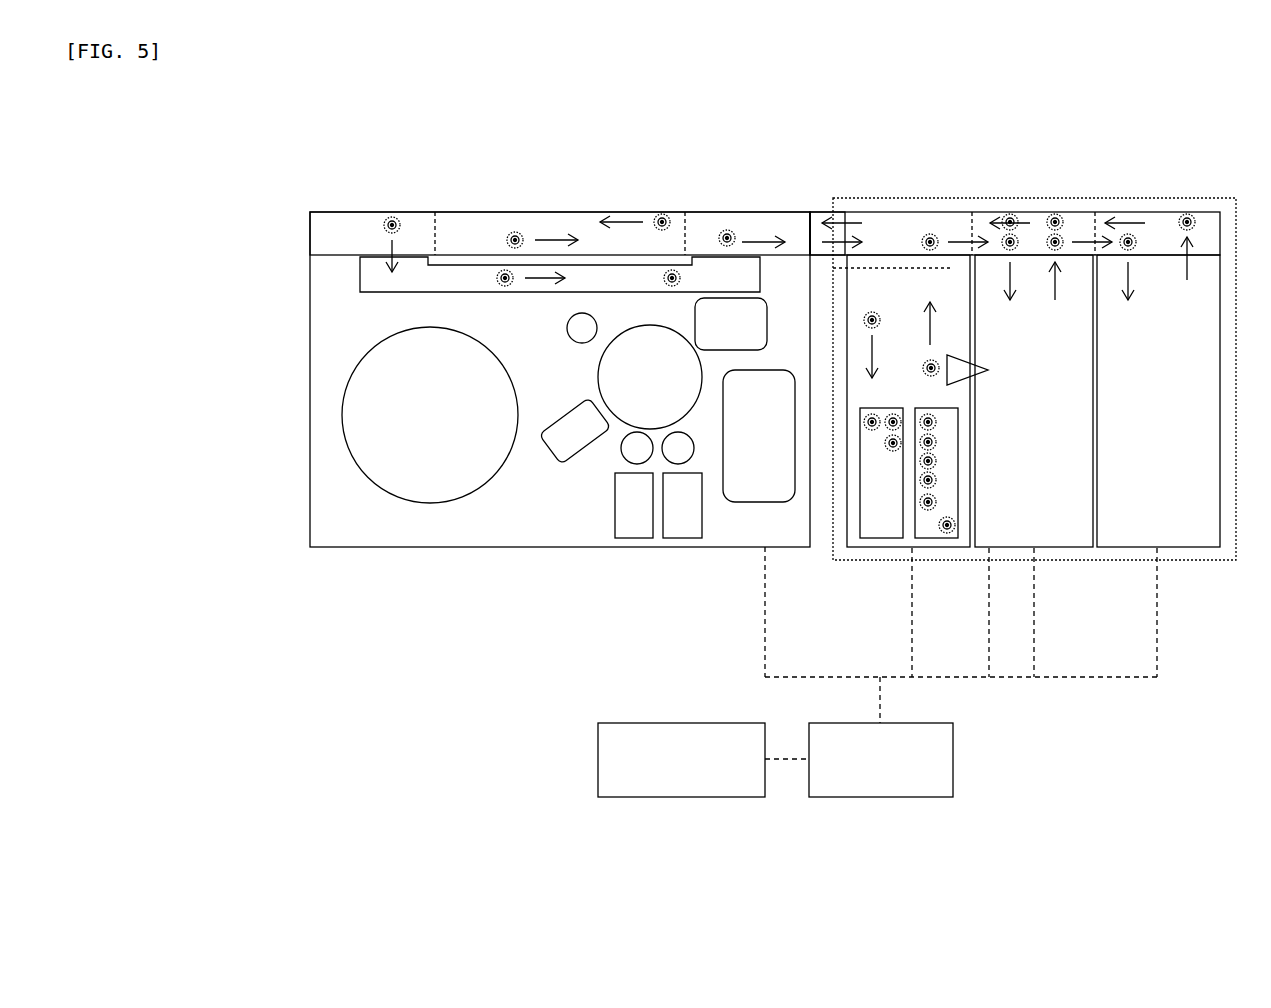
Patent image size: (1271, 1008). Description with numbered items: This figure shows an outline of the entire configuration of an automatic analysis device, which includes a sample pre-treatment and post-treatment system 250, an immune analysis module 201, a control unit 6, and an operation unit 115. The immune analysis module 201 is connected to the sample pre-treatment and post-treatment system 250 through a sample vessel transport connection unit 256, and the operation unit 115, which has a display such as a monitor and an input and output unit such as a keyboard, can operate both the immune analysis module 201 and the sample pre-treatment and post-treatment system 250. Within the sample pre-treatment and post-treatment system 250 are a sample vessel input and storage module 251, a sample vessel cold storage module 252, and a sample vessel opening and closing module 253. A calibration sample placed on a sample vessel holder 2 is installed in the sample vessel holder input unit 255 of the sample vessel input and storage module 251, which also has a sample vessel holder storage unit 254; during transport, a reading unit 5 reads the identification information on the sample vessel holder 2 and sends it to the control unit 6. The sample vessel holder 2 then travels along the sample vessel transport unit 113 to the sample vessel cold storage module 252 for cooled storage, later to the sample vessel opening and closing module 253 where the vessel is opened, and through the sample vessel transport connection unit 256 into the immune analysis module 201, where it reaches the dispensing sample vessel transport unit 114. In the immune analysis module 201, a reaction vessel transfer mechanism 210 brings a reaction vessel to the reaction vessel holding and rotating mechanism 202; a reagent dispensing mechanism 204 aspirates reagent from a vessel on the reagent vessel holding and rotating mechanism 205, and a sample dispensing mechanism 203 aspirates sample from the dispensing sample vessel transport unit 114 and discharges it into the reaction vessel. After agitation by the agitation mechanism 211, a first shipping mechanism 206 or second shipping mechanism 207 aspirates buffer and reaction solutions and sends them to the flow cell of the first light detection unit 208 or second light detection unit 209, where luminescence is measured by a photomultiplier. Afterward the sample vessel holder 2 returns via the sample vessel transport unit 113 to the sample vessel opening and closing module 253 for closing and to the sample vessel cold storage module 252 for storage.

The sample vessel holder 2 is at (727, 233).
The reading unit 5 is at (963, 385).
The control unit 6 is at (877, 797).
The sample vessel transport unit 113 is at (632, 212).
The dispensing sample vessel transport unit 114 is at (453, 265).
The operation unit 115 is at (703, 797).
The immune analysis module 201 is at (355, 547).
The reaction vessel holding and rotating mechanism 202 is at (620, 422).
The sample dispensing mechanism 203 is at (732, 298).
The reagent dispensing mechanism 204 is at (555, 463).
The reagent vessel holding and rotating mechanism 205 is at (415, 498).
The first shipping mechanism 206 is at (630, 463).
The second shipping mechanism 207 is at (683, 463).
The first light detection unit 208 is at (643, 538).
The second light detection unit 209 is at (687, 538).
The reaction vessel transfer mechanism 210 is at (773, 547).
The agitation mechanism 211 is at (583, 312).
The sample pre-treatment and post-treatment system 250 is at (1143, 198).
The sample vessel input and storage module 251 is at (960, 547).
The sample vessel cold storage module 252 is at (1053, 548).
The sample vessel opening and closing module 253 is at (1183, 548).
The sample vessel holder storage unit 254 is at (880, 547).
The sample vessel holder input unit 255 is at (940, 547).
The sample vessel transport connection unit 256 is at (827, 212).